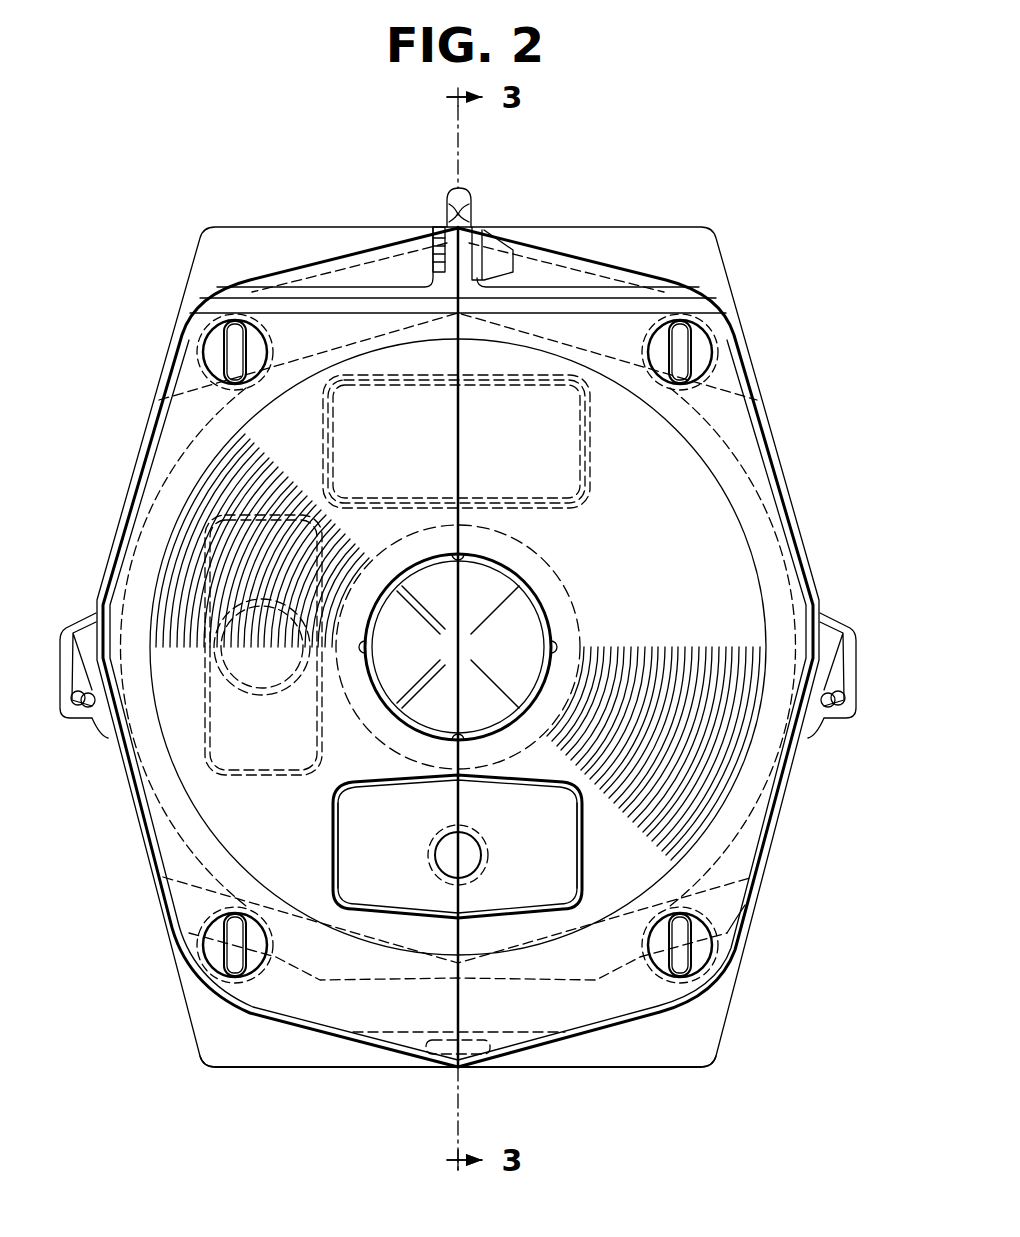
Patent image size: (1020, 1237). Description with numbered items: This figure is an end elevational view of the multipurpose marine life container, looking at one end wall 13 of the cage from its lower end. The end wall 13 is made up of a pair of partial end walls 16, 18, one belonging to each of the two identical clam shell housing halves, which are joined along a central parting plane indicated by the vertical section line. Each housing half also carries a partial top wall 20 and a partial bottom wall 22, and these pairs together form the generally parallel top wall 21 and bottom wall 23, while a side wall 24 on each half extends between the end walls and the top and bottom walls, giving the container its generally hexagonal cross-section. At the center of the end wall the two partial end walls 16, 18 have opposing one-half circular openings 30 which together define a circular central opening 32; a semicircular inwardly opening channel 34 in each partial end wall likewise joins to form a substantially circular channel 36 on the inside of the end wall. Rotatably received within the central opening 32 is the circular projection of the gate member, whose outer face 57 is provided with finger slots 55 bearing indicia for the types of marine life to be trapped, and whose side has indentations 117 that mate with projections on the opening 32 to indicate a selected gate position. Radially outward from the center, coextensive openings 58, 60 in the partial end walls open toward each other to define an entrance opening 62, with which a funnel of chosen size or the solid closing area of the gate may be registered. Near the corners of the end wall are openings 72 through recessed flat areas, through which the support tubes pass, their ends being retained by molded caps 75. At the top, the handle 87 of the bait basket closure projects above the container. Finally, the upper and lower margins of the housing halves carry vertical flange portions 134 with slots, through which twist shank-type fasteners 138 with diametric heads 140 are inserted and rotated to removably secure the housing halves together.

The end wall 13 is at (798, 463).
The partial end wall 16 is at (233, 470).
The partial end wall 18 is at (745, 592).
The partial top wall 20 is at (310, 265).
The top wall 21 is at (347, 215).
The partial bottom wall 22 is at (273, 1022).
The bottom wall 23 is at (400, 1077).
The side wall 24 is at (112, 546).
The one-half circular opening 30 is at (420, 560).
The central opening 32 is at (518, 722).
The semicircular inwardly opening channel 34 is at (145, 735).
The circular channel 36 is at (228, 855).
The finger slots 55 is at (525, 560).
The outer face 57 is at (392, 553).
The opening 58 is at (567, 900).
The opening 60 is at (352, 897).
The entrance opening 62 is at (567, 797).
The opening 72 is at (705, 918).
The molded cap 75 is at (683, 962).
The handle 87 is at (462, 190).
The indentations 117 is at (460, 554).
The vertical flange portion 134 is at (400, 287).
The twist shank-type fastener 138 is at (498, 258).
The diametric head 140 is at (433, 268).